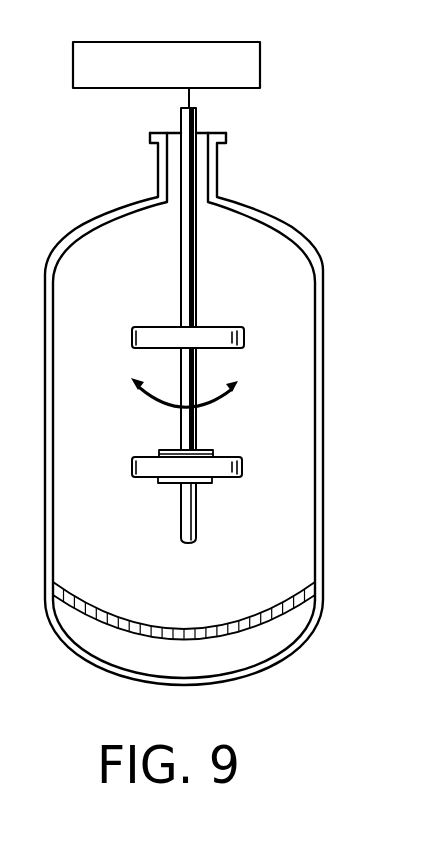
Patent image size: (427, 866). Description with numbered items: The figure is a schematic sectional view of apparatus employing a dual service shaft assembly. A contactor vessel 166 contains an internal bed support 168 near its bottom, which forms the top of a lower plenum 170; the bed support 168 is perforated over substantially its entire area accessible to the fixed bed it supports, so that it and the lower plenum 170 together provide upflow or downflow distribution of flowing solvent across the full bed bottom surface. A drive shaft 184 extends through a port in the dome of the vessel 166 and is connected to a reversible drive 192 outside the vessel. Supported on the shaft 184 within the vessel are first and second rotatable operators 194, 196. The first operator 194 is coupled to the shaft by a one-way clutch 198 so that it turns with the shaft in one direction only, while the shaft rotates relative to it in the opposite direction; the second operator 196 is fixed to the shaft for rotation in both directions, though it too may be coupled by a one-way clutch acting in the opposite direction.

The reversible drive 192 is at (240, 43).
The drive shaft 184 is at (196, 242).
The contactor vessel 166 is at (323, 299).
The second rotatable operator 196 is at (153, 327).
The first rotatable operator 194 is at (137, 478).
The one-way clutch 198 is at (205, 450).
The internal bed support 168 is at (250, 615).
The lower plenum 170 is at (293, 621).